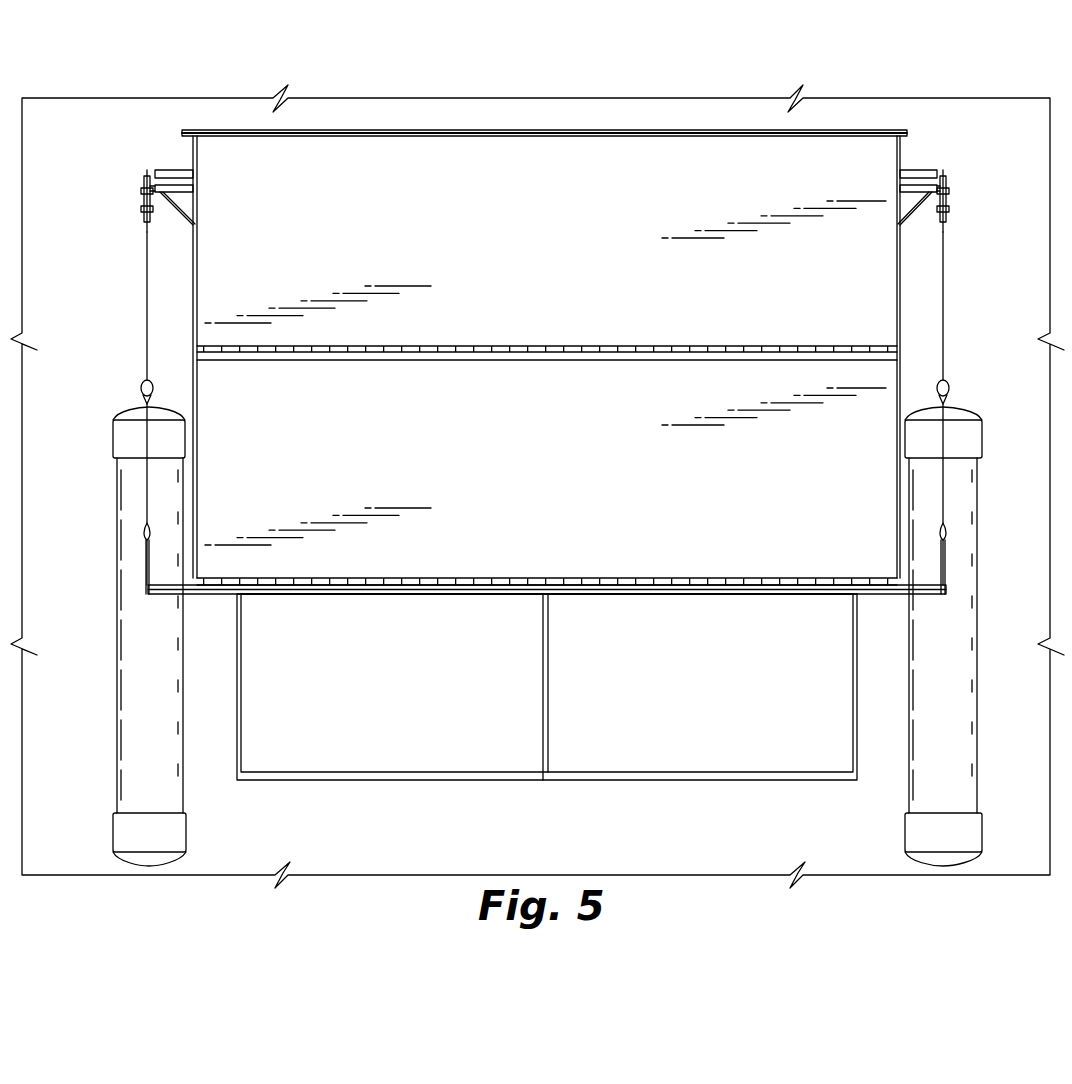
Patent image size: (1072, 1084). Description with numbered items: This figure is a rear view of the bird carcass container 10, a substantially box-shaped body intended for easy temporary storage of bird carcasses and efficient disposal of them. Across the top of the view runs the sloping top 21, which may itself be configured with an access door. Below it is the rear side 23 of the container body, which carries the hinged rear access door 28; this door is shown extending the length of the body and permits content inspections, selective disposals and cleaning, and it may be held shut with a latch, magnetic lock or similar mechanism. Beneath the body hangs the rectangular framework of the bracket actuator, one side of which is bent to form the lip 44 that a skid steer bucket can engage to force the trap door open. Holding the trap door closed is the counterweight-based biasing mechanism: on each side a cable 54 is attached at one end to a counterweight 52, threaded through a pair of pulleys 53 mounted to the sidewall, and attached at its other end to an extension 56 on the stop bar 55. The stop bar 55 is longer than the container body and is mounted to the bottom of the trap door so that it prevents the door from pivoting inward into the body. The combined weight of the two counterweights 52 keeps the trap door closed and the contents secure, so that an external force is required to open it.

The bird carcass container 10 is at (102, 137).
The sloping top 21 is at (903, 130).
The rear side 23 is at (575, 506).
The rear access door 28 is at (590, 262).
The lip 44 is at (658, 770).
The counterweight 52 is at (115, 772).
The pulleys 53 is at (124, 200).
The cable 54 is at (147, 259).
The stop bar 55 is at (354, 596).
The extension 56 is at (145, 582).